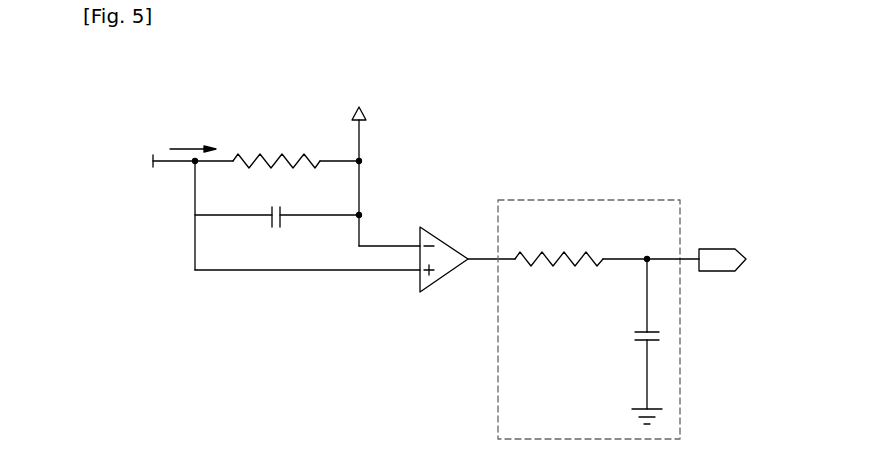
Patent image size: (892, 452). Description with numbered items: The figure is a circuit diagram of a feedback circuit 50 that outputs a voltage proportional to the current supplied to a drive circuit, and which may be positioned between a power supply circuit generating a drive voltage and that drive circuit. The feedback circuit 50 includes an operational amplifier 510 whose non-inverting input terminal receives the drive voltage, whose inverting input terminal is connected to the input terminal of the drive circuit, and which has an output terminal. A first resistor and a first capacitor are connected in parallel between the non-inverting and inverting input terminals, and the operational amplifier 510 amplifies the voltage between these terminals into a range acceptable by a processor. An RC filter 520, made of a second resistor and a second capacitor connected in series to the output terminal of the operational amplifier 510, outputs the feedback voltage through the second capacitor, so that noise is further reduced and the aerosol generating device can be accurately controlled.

The feedback circuit 50 is at (161, 52).
The operational amplifier 510 is at (447, 243).
The RC filter 520 is at (595, 198).